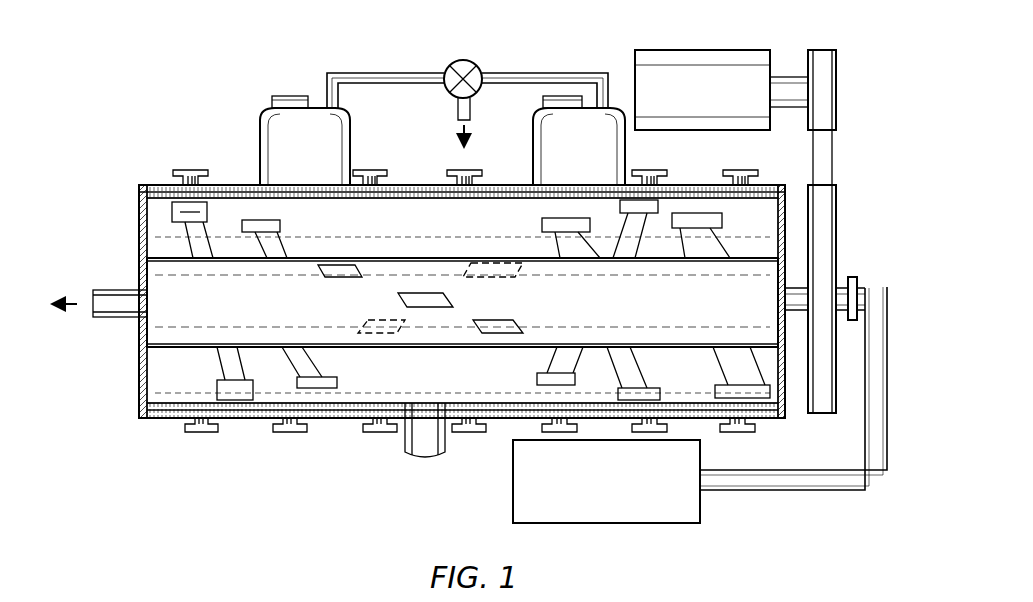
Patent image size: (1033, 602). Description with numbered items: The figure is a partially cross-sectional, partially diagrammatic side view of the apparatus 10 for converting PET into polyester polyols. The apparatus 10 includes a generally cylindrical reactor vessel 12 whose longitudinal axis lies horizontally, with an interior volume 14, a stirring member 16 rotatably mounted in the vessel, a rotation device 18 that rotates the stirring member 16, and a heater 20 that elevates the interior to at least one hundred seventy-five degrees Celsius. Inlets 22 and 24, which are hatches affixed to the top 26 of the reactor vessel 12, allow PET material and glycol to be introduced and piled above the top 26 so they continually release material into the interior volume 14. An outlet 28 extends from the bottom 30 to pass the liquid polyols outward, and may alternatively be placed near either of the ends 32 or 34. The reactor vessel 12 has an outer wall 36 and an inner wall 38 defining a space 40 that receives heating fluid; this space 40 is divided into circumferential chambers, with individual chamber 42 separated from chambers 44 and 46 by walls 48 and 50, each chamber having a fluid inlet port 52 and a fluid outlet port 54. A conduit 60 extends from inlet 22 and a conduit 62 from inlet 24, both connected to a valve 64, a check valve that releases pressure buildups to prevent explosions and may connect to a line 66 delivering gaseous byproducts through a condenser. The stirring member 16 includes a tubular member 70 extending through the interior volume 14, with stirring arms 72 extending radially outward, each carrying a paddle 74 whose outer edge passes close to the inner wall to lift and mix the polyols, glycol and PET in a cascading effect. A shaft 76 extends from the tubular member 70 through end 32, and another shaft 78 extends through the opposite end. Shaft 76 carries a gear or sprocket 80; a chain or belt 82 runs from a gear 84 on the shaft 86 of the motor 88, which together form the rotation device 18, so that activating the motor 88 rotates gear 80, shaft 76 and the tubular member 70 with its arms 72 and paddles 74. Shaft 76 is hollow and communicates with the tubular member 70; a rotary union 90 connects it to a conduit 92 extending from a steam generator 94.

The apparatus 10 is at (714, 36).
The reactor vessel 12 is at (242, 185).
The interior volume 14 is at (142, 408).
The stirring member 16 is at (313, 256).
The rotation device 18 is at (765, 220).
The heater 20 is at (628, 504).
The inlet 22 is at (260, 118).
The inlet 24 is at (625, 158).
The top 26 is at (683, 185).
The outlet 28 is at (430, 457).
The bottom 30 is at (263, 420).
The end 32 is at (787, 408).
The end 34 is at (140, 350).
The outer wall 36 is at (420, 185).
The inner wall 38 is at (442, 198).
The space 40 is at (552, 195).
The individual chamber 42 is at (533, 410).
The chamber 44 is at (473, 402).
The chamber 46 is at (661, 403).
The wall 48 is at (607, 405).
The wall 50 is at (512, 404).
The fluid inlet port 52 is at (753, 168).
The fluid outlet port 54 is at (748, 432).
The conduit 60 is at (345, 73).
The conduit 62 is at (548, 73).
The valve 64 is at (449, 63).
The line 66 is at (455, 108).
The tubular member 70 is at (437, 253).
The stirring arms 72 is at (207, 238).
The paddle 74 is at (722, 220).
The shaft 76 is at (795, 287).
The shaft 78 is at (113, 290).
The gear or sprocket 80 is at (837, 222).
The chain or belt 82 is at (832, 160).
The gear 84 is at (838, 55).
The shaft 86 is at (785, 77).
The motor 88 is at (713, 57).
The rotary union 90 is at (857, 278).
The conduit 92 is at (793, 490).
The steam generator 94 is at (693, 507).